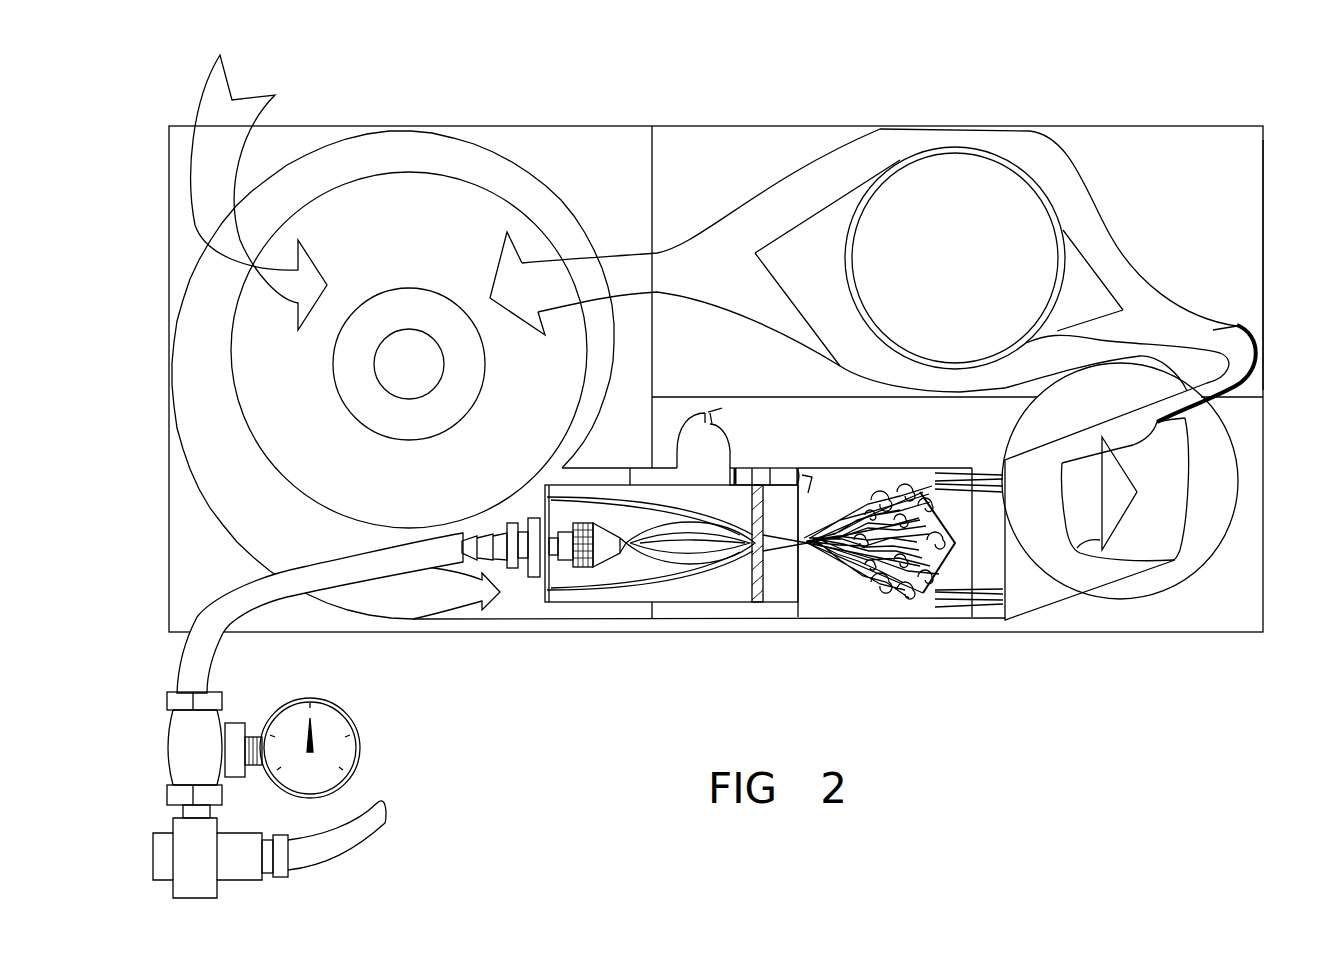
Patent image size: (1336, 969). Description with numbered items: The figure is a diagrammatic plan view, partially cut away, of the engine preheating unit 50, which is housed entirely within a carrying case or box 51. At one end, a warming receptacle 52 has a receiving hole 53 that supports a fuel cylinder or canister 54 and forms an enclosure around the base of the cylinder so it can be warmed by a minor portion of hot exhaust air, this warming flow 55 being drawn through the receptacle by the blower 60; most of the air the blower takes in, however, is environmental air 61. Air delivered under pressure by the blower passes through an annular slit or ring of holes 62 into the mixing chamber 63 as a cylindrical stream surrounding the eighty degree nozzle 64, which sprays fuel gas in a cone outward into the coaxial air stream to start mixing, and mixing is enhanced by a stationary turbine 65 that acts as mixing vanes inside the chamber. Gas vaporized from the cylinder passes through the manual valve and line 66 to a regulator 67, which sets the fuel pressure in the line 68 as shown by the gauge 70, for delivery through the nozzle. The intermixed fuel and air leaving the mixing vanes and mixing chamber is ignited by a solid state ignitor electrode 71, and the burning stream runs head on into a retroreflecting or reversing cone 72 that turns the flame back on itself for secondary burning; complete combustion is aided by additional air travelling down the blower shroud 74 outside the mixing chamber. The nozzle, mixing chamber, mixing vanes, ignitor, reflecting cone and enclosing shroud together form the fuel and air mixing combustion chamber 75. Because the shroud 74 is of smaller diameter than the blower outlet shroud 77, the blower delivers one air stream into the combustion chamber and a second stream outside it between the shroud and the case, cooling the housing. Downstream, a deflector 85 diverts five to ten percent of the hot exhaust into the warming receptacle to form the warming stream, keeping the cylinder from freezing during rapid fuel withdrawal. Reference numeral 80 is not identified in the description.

The engine preheating unit 50 is at (1088, 90).
The carrying case 51 is at (790, 125).
The warming receptacle 52 is at (1217, 198).
The receiving hole 53 is at (846, 230).
The fuel cylinder 54 is at (955, 258).
The warming air flow 55 is at (1236, 322).
The blower 60 is at (583, 222).
The environmental air 61 is at (243, 95).
The annular slit or ring of holes 62 is at (547, 497).
The mixing chamber 63 is at (627, 482).
The nozzle 64 is at (651, 543).
The stationary turbine 65 is at (757, 617).
The manual valve and line 66 is at (355, 843).
The regulator 67 is at (168, 833).
The line 68 is at (177, 672).
The gauge 70 is at (358, 768).
The solid state ignitor electrode 71 is at (780, 468).
The reversing cone 72 is at (947, 560).
The blower shroud 74 is at (662, 465).
The fuel and air mixing combustion chamber 75 is at (945, 630).
The blower outlet shroud 77 is at (638, 466).
The outlet blower 80 is at (1117, 585).
The deflector 85 is at (1262, 373).